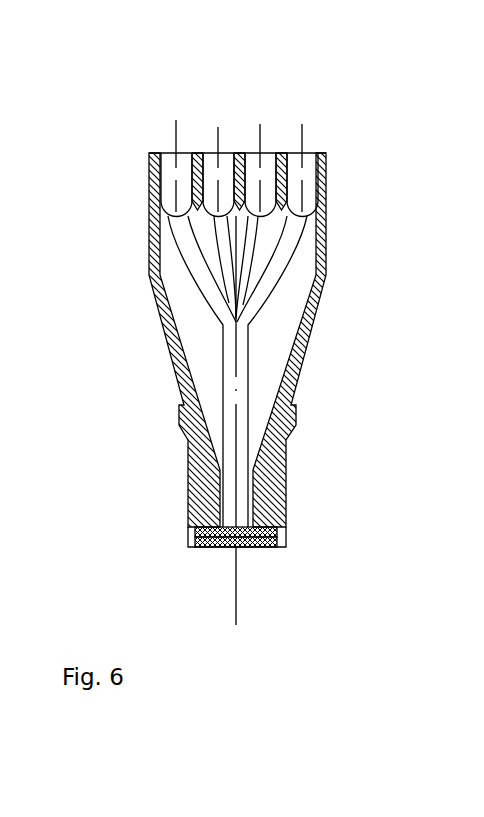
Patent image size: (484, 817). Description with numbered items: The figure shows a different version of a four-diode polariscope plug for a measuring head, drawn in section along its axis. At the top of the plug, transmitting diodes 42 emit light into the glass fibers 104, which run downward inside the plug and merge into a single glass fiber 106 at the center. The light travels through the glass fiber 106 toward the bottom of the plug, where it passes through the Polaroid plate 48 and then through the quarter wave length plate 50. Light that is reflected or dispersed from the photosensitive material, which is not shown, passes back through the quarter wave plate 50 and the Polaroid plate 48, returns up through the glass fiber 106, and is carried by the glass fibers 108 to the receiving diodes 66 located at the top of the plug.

The transmitting diodes 42 is at (142, 170).
The receiving diodes 66 is at (209, 160).
The glass fibers 104 is at (176, 270).
The glass fibers 108 is at (216, 240).
The glass fiber 106 is at (253, 322).
The quarter wave length plate 50 is at (268, 525).
The Polaroid plate 48 is at (268, 540).